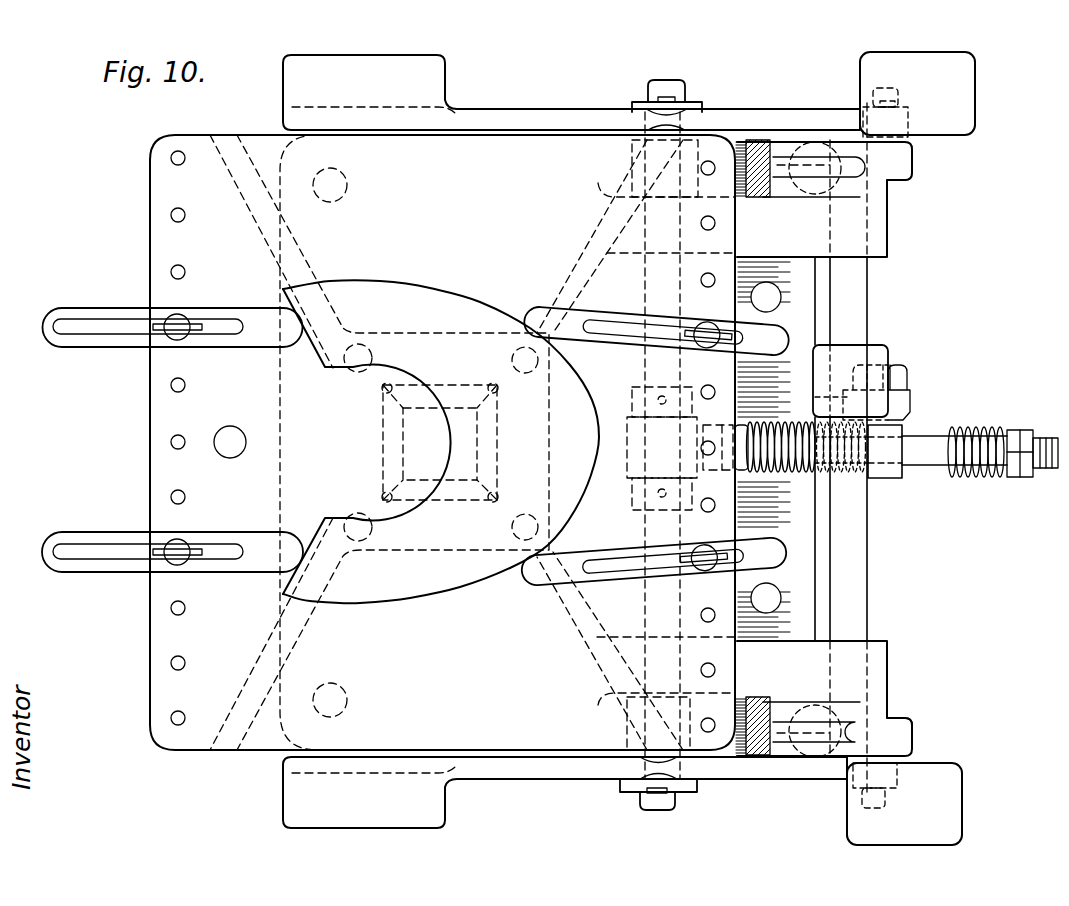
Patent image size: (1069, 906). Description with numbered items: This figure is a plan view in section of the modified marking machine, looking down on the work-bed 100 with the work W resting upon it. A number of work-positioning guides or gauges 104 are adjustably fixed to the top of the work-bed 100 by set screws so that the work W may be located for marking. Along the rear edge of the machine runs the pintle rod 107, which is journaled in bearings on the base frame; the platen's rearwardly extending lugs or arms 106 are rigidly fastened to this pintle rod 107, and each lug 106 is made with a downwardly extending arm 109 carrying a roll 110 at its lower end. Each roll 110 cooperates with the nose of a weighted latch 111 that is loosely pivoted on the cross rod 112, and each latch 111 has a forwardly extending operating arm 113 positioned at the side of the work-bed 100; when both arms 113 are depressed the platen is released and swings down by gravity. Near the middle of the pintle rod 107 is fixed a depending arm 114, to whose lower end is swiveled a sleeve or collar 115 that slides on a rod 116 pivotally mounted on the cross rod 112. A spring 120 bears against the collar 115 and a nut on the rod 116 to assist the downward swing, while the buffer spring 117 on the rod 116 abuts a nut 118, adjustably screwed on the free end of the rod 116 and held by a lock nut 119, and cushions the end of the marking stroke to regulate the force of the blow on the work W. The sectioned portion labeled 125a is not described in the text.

The work-bed 100 is at (442, 442).
The work W is at (401, 290).
The work-positioning guides or gauges 104 is at (236, 301).
The lugs or arms 106 is at (822, 150).
The pintle rod 107 is at (853, 577).
The downwardly extending arm 109 is at (912, 162).
The roll 110 is at (910, 108).
The latch 111 is at (975, 105).
The cross rod 112 is at (647, 350).
The forwardly extending operating arm 113 is at (530, 118).
The depending arm 114 is at (870, 338).
The sleeve or collar 115 is at (893, 480).
The rod 116 is at (927, 433).
The buffer spring 117 is at (988, 478).
The nut 118 is at (1015, 430).
The lock nut 119 is at (1030, 432).
The spring 120 is at (783, 425).
The jaw section 125a is at (773, 198).